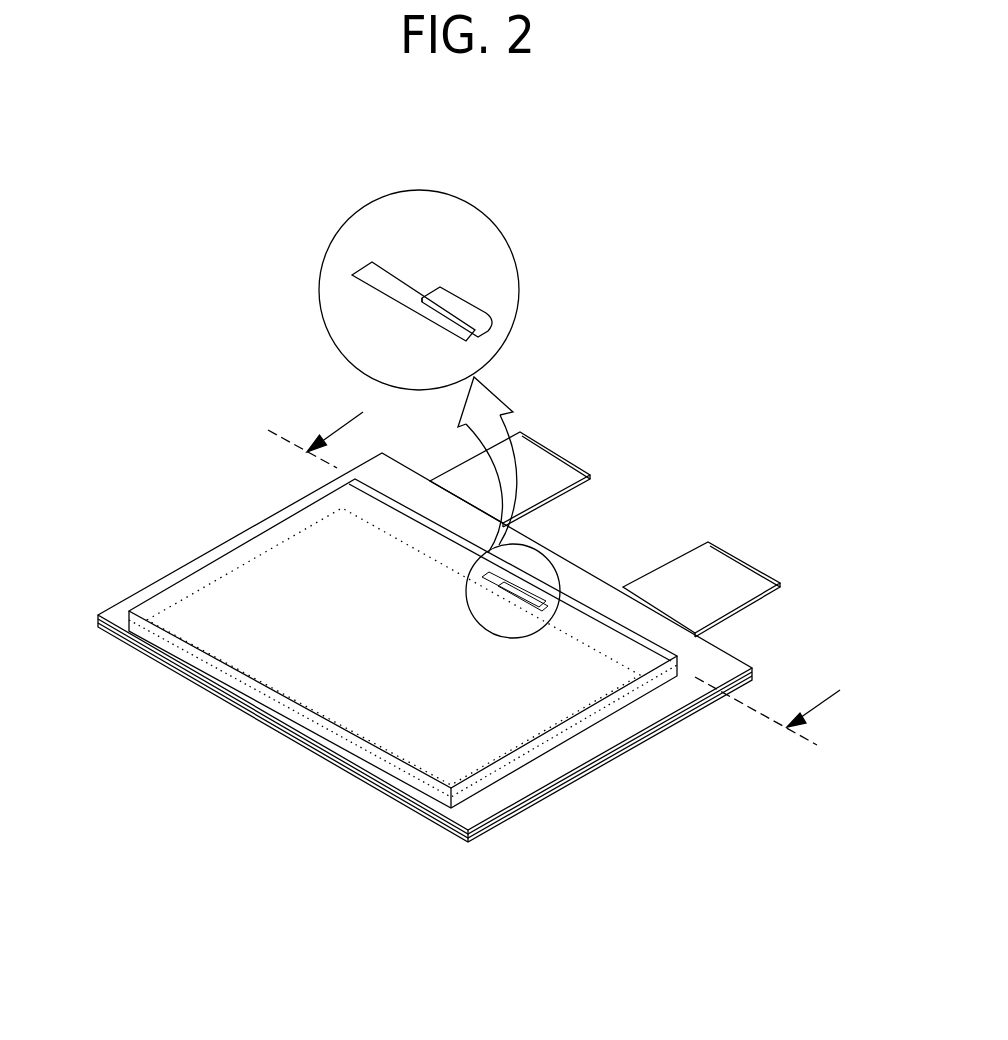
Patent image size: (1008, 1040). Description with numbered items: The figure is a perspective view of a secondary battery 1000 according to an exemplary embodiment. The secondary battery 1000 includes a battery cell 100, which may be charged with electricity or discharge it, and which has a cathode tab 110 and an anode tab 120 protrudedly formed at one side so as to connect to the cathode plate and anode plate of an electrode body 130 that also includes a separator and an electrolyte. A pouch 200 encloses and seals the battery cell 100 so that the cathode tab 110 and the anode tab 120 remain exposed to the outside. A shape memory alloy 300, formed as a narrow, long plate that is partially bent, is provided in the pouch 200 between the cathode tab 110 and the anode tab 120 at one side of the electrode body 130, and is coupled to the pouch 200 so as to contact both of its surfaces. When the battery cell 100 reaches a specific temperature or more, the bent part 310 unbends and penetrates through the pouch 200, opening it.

The secondary battery 1000 is at (207, 492).
The battery cell 100 is at (532, 810).
The electrode body 130 is at (403, 643).
The cathode tab 110 is at (725, 577).
The anode tab 120 is at (533, 453).
The pouch 200 is at (597, 745).
The shape memory alloy 300 is at (398, 287).
The bent part 310 is at (490, 327).